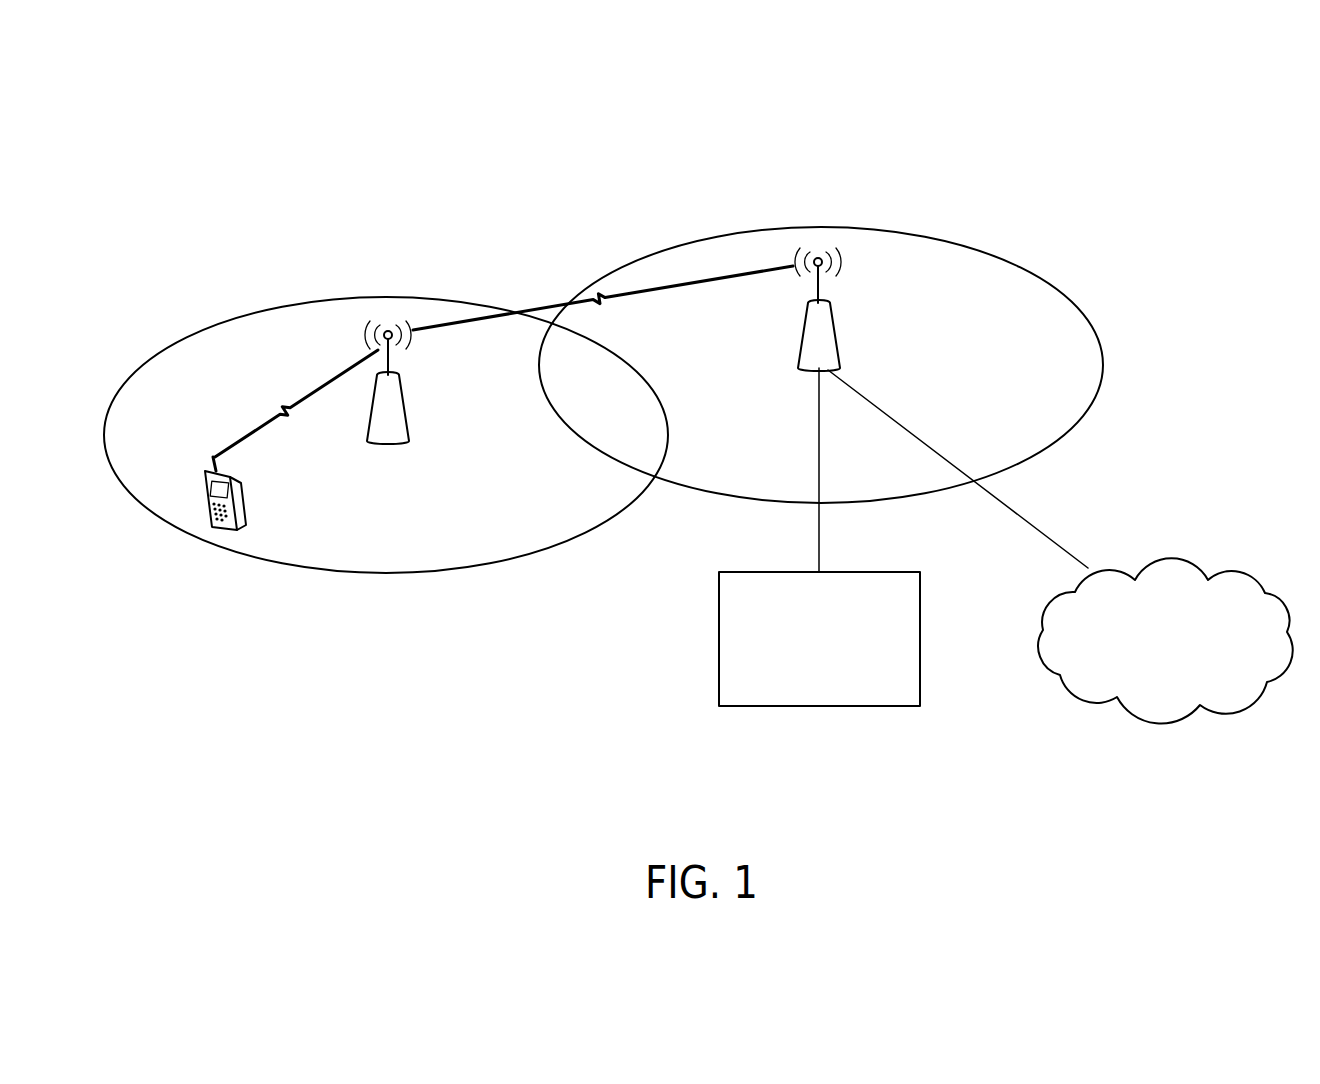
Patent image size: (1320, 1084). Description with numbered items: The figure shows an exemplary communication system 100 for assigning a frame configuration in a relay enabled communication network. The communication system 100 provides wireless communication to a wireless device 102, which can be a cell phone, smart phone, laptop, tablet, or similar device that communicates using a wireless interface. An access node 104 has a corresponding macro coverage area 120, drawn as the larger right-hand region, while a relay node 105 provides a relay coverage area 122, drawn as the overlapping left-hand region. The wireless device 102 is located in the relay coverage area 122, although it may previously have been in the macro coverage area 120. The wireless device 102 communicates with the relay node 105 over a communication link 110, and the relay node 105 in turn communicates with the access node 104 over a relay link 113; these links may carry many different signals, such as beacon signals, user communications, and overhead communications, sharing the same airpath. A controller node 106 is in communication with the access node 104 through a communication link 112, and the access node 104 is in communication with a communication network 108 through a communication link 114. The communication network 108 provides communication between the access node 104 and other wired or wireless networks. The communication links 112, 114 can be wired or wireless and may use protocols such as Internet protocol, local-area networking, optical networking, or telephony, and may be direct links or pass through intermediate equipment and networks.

The communication system 100 is at (136, 152).
The wireless device 102 is at (247, 490).
The access node 104 is at (836, 333).
The relay node 105 is at (408, 410).
The controller node 106 is at (819, 639).
The communication network 108 is at (1165, 640).
The communication link 110 is at (290, 400).
The communication link 112 is at (818, 467).
The relay link 113 is at (643, 298).
The communication link 114 is at (912, 432).
The macro coverage area 120 is at (1005, 258).
The relay coverage area 122 is at (402, 575).